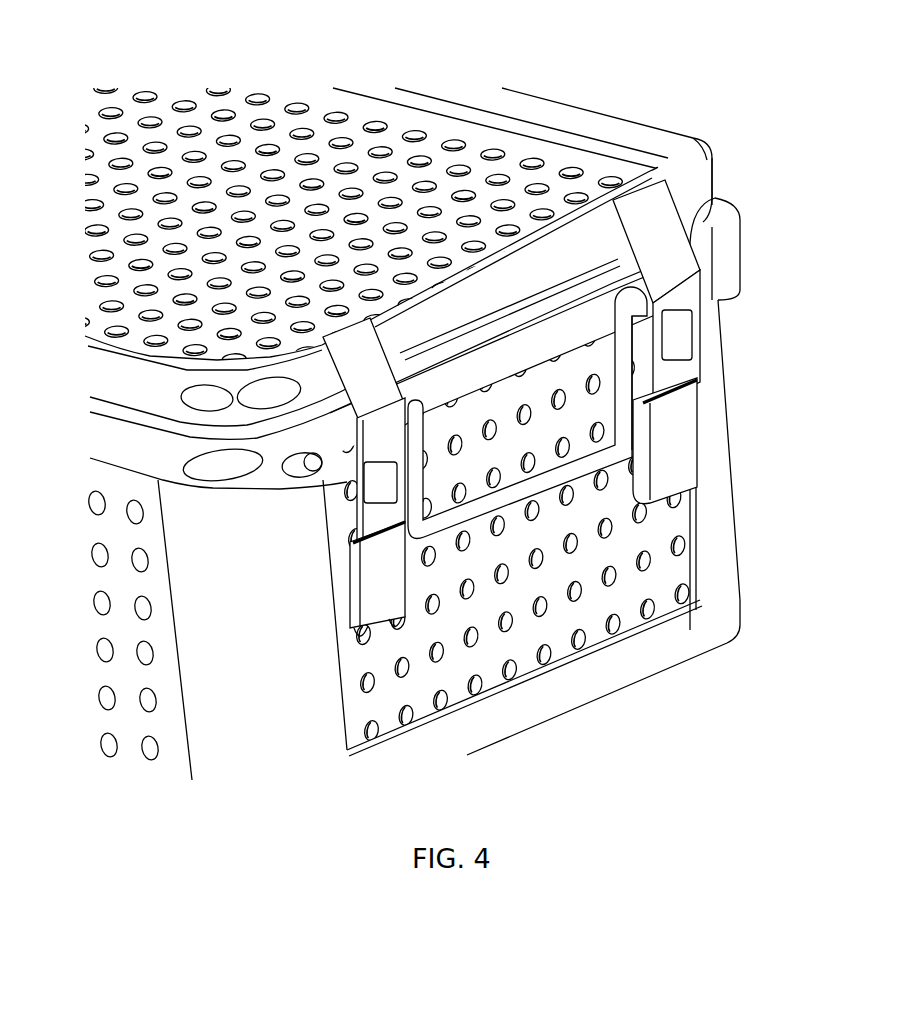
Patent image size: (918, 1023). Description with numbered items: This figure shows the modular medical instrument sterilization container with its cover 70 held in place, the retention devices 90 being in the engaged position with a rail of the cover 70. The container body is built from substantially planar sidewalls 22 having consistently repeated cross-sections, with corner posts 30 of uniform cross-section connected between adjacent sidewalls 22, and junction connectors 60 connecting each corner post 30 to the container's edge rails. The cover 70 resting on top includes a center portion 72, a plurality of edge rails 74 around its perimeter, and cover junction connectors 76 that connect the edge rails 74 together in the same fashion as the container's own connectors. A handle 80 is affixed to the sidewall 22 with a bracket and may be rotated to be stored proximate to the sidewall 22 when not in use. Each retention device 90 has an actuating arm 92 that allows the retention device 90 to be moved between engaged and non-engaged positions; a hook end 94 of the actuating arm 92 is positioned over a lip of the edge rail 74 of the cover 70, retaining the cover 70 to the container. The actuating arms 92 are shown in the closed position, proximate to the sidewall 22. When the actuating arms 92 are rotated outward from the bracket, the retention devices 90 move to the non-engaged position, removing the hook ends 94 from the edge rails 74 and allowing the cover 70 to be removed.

The sidewall 22 is at (593, 560).
The corner post 30 is at (715, 503).
The junction connector 60 is at (740, 276).
The cover 70 is at (563, 160).
The center portion 72 is at (428, 203).
The edge rail 74 is at (490, 290).
The cover junction connector 76 is at (693, 160).
The handle 80 is at (557, 467).
The retention device 90 is at (660, 262).
The actuating arm 92 is at (678, 456).
The hook end 94 is at (352, 317).